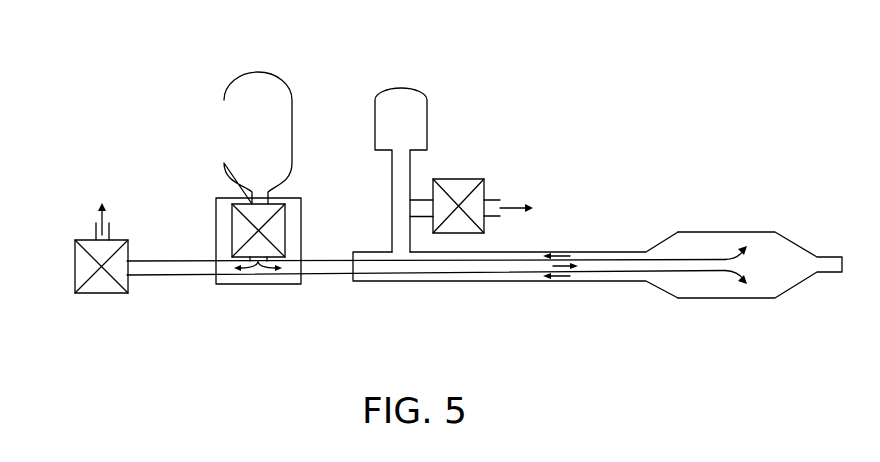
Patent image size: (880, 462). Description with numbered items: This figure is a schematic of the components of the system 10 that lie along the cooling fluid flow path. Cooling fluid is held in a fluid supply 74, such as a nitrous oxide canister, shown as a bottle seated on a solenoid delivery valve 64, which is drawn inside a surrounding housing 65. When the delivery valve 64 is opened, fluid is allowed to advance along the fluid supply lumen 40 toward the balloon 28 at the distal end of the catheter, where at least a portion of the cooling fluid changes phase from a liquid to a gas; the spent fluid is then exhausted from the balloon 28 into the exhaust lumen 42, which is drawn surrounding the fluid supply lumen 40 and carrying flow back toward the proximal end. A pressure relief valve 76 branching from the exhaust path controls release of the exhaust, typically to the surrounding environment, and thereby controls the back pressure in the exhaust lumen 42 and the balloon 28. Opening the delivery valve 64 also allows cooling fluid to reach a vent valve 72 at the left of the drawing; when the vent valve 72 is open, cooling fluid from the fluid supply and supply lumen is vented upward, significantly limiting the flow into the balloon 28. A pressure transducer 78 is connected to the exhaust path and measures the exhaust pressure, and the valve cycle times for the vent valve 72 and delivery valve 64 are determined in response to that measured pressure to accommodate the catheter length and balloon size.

The system 10 is at (713, 88).
The balloon 28 is at (748, 232).
The fluid supply lumen 40 is at (618, 265).
The exhaust lumen 42 is at (524, 278).
The solenoid delivery valve 64 is at (232, 224).
The valve housing 65 is at (301, 212).
The vent valve 72 is at (75, 277).
The fluid supply 74 is at (260, 72).
The pressure relief valve 76 is at (475, 179).
The pressure transducer 78 is at (427, 117).